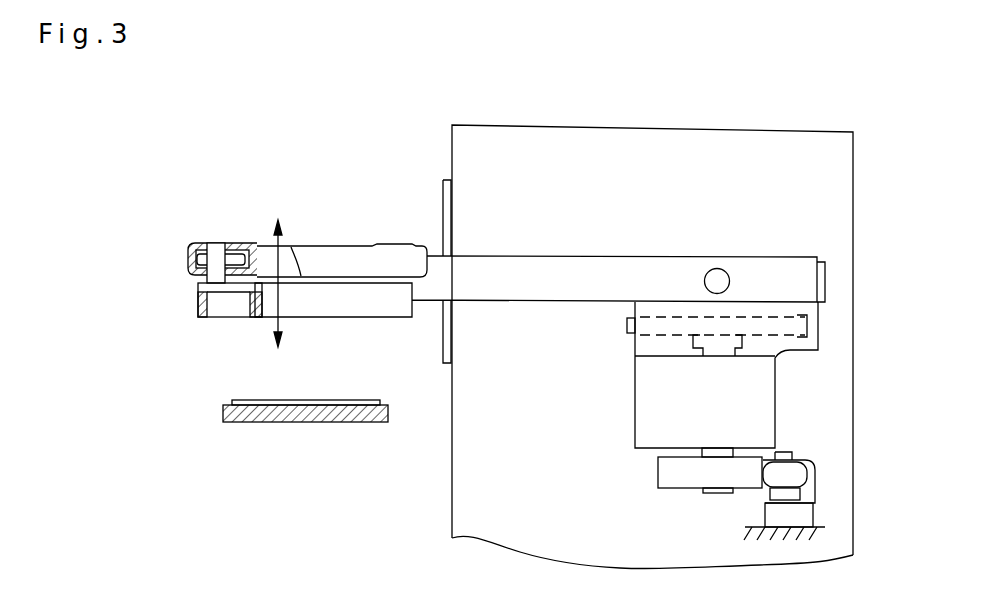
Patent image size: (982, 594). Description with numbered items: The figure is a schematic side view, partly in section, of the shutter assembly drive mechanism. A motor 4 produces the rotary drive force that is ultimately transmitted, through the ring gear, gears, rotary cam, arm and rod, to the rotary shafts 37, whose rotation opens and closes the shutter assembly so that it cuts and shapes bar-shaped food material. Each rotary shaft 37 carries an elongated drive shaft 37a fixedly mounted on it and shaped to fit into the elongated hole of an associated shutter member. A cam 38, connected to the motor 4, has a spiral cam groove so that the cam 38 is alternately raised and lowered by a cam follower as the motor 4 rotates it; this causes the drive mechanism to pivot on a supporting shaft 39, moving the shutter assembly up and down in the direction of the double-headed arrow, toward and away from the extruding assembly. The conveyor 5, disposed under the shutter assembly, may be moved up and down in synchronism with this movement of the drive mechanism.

The motor 4 is at (663, 400).
The conveyor 5 is at (307, 398).
The rotary shaft 37 is at (197, 285).
The drive shaft 37a is at (218, 313).
The cam 38 is at (668, 475).
The supporting shaft 39 is at (720, 277).